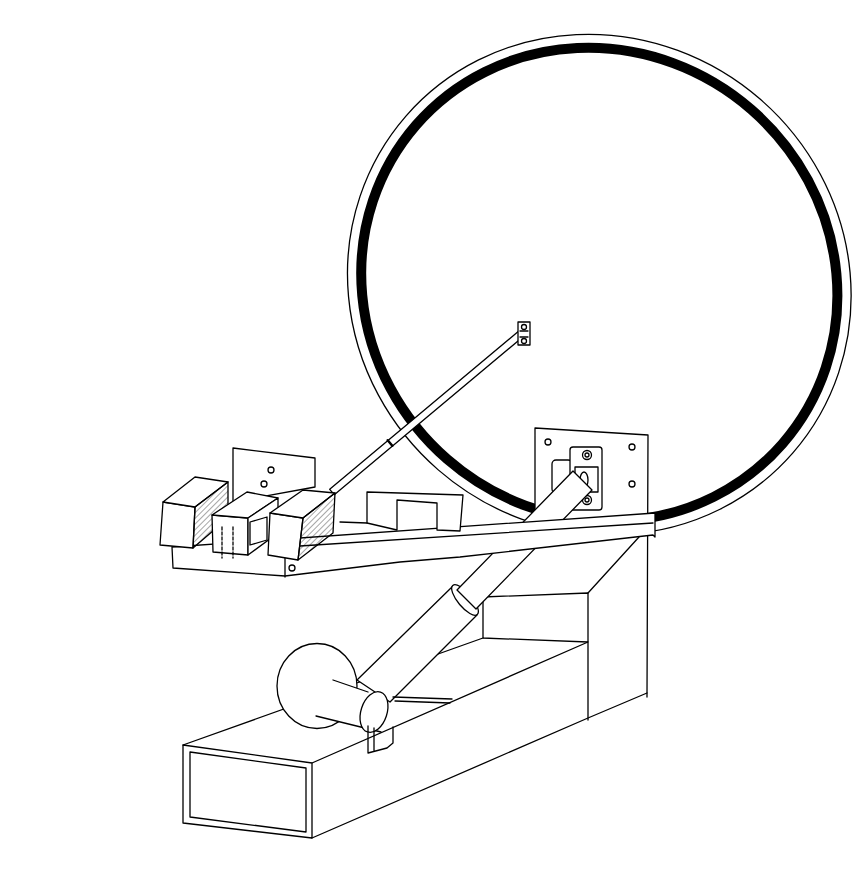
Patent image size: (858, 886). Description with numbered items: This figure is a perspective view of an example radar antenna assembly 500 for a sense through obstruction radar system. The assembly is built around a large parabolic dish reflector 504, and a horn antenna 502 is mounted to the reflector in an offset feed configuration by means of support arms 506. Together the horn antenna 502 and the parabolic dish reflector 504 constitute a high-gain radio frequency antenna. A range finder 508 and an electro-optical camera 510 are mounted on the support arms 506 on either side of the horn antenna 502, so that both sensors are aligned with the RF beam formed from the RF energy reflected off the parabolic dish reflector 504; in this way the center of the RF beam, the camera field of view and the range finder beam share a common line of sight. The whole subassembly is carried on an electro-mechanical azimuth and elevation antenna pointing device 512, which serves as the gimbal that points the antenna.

The radar antenna assembly 500 is at (303, 193).
The horn antenna 502 is at (277, 450).
The parabolic dish reflector 504 is at (350, 322).
The support arms 506 is at (286, 577).
The range finder 508 is at (158, 523).
The electro-optical camera 510 is at (328, 545).
The electro-mechanical azimuth and elevation antenna pointing device 512 is at (588, 598).